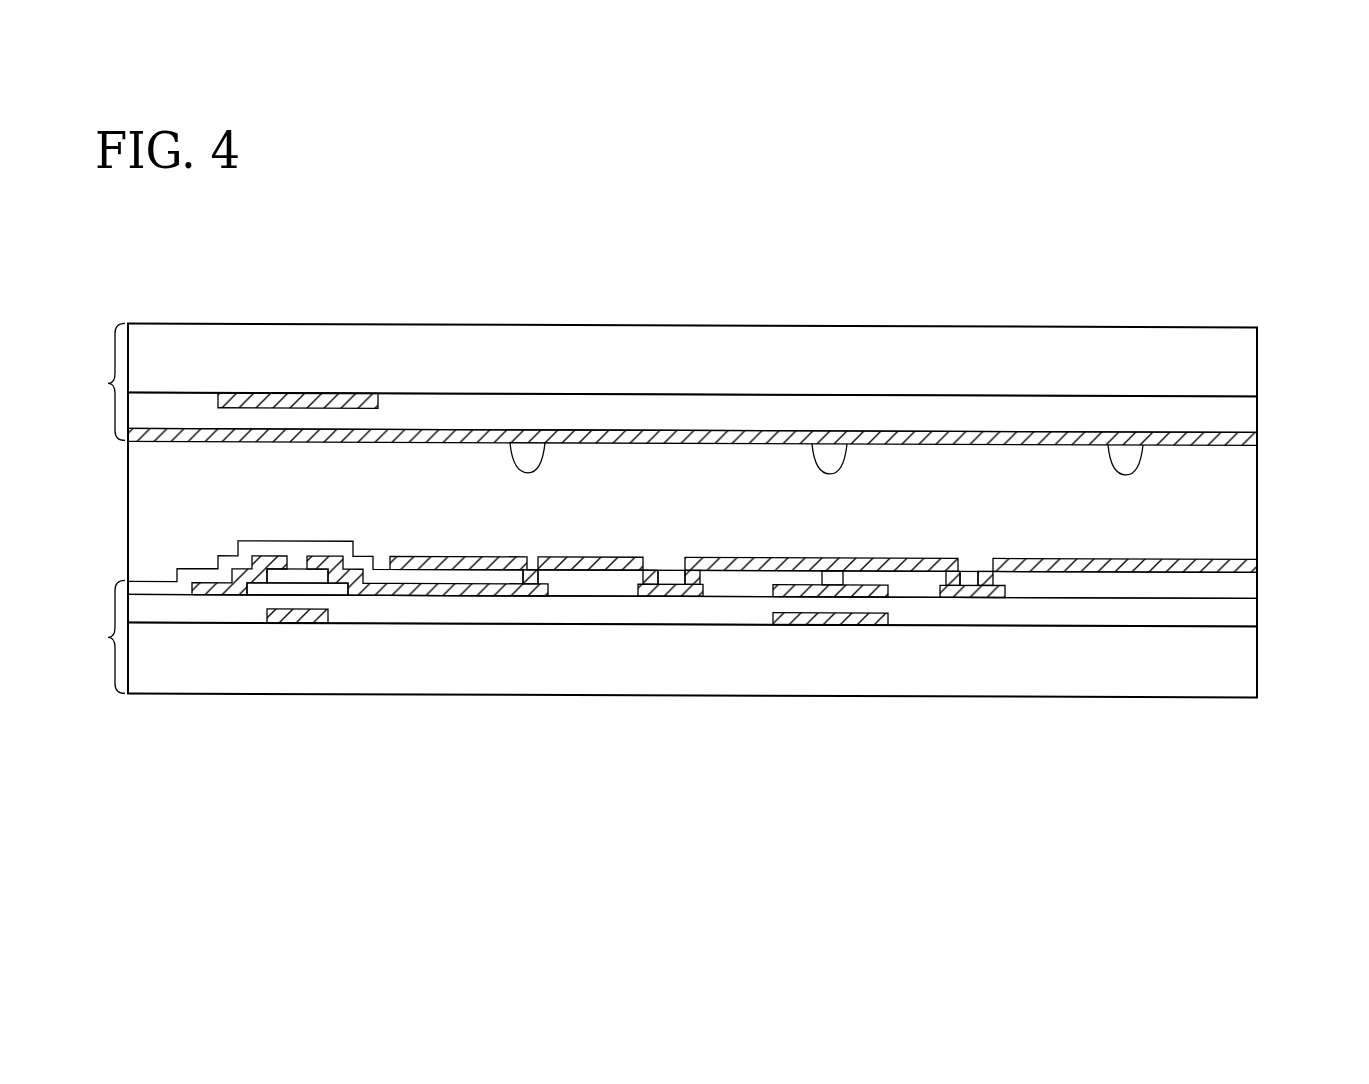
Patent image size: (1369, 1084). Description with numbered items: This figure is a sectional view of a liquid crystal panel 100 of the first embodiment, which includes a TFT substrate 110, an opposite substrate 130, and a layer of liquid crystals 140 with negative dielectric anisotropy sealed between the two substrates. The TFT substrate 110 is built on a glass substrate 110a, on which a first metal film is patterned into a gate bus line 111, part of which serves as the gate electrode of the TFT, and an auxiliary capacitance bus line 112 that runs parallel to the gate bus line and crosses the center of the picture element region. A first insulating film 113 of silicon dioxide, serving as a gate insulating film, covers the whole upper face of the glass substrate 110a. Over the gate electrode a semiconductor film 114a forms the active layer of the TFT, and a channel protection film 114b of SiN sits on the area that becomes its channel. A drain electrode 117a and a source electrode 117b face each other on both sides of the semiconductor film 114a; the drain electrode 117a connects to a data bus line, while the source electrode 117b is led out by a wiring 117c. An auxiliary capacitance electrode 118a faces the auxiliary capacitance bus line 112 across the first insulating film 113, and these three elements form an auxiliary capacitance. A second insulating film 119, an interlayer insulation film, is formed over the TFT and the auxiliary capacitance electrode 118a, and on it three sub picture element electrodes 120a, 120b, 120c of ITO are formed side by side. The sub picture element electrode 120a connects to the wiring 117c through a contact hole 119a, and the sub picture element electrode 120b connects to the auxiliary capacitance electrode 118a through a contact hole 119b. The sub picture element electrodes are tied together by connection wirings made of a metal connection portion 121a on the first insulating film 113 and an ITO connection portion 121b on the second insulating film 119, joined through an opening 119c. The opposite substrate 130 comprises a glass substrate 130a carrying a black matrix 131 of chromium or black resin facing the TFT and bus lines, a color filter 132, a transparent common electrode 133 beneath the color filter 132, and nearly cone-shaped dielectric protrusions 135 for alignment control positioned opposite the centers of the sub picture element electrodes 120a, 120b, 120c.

The liquid crystal panel 100 is at (1230, 298).
The TFT substrate 110 is at (86, 636).
The glass substrate 110a is at (1258, 654).
The gate bus line 111 is at (297, 616).
The auxiliary capacitance bus line 112 is at (828, 617).
The first insulating film 113 is at (1258, 604).
The semiconductor film 114a is at (340, 594).
The channel protection film 114b is at (296, 574).
The drain electrode 117a is at (220, 588).
The source electrode 117b is at (388, 594).
The wiring 117c is at (483, 594).
The auxiliary capacitance electrode 118a is at (893, 596).
The second insulating film 119 is at (1258, 584).
The contact hole 119a is at (530, 566).
The contact hole 119b is at (828, 568).
The opening 119c is at (650, 567).
The sub picture element electrode 120a is at (466, 554).
The sub picture element electrode 120b is at (748, 554).
The sub picture element electrode 120c is at (1133, 554).
The metal connection portion 121a is at (668, 594).
The ITO connection portion 121b is at (667, 568).
The opposite substrate 130 is at (86, 381).
The glass substrate 130a is at (1258, 362).
The black matrix 131 is at (308, 397).
The color filter 132 is at (1258, 415).
The common electrode 133 is at (1258, 443).
The protrusion 135 is at (538, 452).
The layer of liquid crystals 140 is at (130, 518).